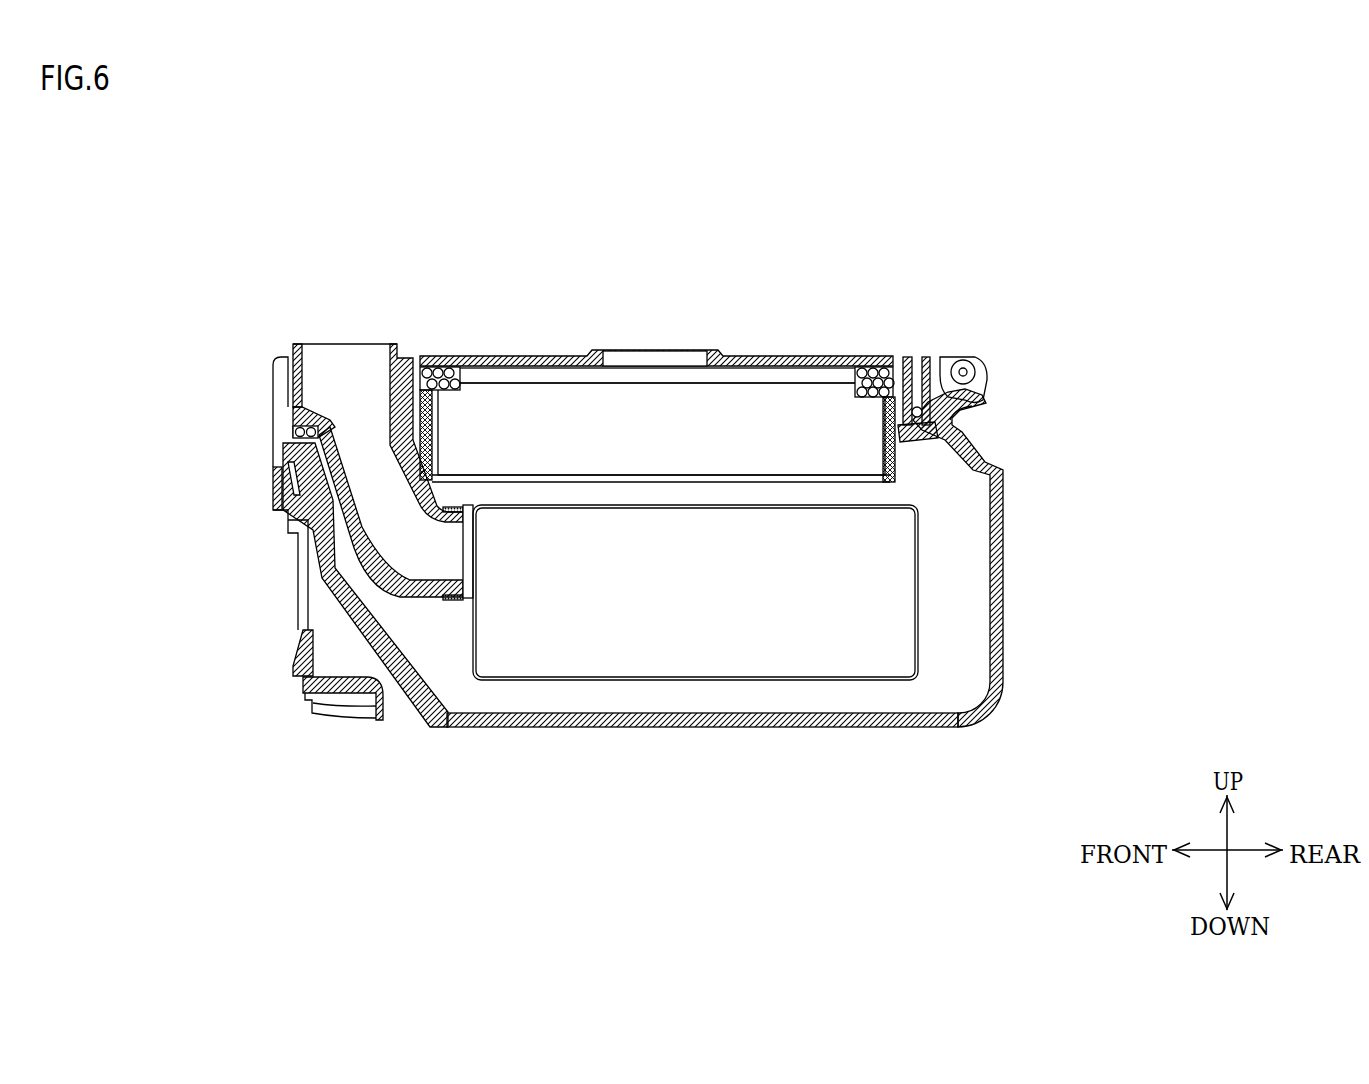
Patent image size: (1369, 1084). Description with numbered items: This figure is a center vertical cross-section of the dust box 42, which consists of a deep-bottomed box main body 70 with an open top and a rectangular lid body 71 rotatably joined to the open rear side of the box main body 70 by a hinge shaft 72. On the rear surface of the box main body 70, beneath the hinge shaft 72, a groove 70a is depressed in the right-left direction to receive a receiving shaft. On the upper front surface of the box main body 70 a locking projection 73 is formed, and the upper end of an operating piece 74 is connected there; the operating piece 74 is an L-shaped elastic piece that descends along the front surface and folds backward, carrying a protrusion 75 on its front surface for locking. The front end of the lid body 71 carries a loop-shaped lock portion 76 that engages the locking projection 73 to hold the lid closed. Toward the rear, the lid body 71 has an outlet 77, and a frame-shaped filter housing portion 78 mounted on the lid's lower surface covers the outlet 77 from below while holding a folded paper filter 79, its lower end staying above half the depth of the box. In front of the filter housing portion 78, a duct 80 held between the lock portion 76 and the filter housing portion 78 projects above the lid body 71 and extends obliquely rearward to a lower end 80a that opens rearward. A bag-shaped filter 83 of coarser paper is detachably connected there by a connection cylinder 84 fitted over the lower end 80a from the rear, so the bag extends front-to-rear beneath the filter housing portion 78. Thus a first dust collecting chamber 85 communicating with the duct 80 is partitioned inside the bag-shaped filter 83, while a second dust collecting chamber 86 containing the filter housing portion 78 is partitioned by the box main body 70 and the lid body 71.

The dust box 42 is at (901, 258).
The box main body 70 is at (1003, 568).
The groove 70a is at (943, 428).
The lid body 71 is at (772, 355).
The hinge shaft 72 is at (963, 360).
The locking projection 73 is at (283, 463).
The operating piece 74 is at (333, 693).
The protrusion 75 is at (300, 658).
The lock portion 76 is at (282, 497).
The outlet 77 is at (655, 350).
The filter housing portion 78 is at (895, 357).
The filter 79 is at (813, 402).
The duct 80 is at (343, 358).
The lower end 80a is at (455, 550).
The bag-shaped filter 83 is at (758, 685).
The connection cylinder 84 is at (453, 600).
The first dust collecting chamber 85 is at (687, 608).
The second dust collecting chamber 86 is at (969, 608).